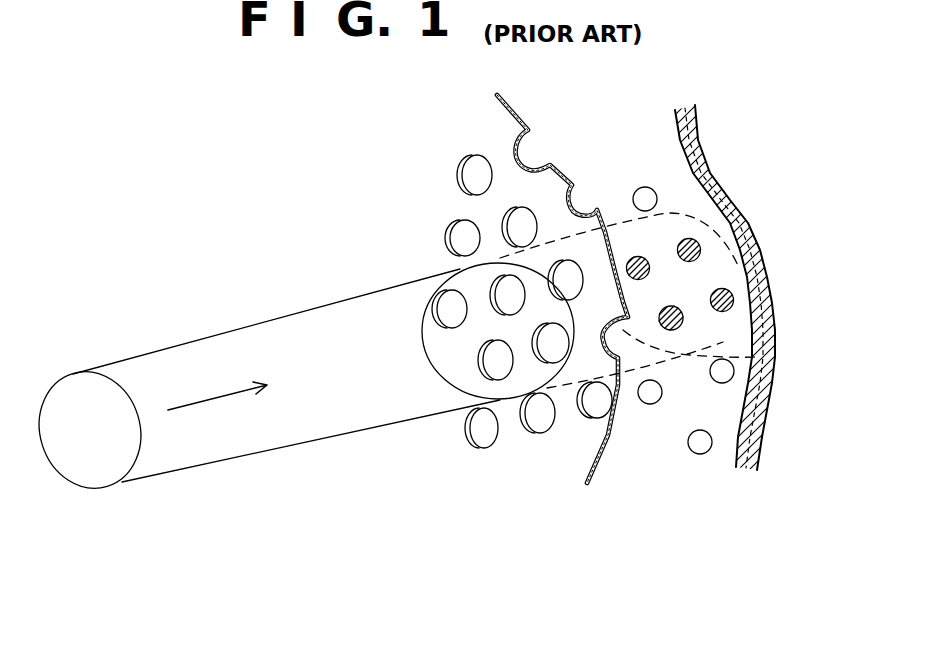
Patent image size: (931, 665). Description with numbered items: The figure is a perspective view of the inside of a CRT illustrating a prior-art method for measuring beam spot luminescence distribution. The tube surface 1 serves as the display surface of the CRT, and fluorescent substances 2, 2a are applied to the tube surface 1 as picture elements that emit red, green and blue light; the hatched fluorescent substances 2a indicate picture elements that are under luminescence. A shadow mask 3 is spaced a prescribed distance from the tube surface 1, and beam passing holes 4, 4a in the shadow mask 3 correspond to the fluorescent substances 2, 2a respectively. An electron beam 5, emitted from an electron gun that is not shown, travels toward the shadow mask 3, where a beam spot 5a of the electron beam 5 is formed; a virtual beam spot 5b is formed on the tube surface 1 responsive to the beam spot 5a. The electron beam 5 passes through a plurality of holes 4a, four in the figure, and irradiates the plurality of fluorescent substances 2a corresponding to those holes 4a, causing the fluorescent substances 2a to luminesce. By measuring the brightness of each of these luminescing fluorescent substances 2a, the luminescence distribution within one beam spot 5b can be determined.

The tube surface 1 is at (703, 151).
The fluorescent substances 2 is at (646, 199).
The fluorescent substances under luminescence 2a is at (700, 247).
The shadow mask 3 is at (533, 128).
The beam passing holes 4 is at (458, 238).
The beam passing holes 4a is at (494, 355).
The electron beam 5 is at (288, 312).
The beam spot 5a is at (440, 372).
The virtual beam spot 5b is at (757, 357).